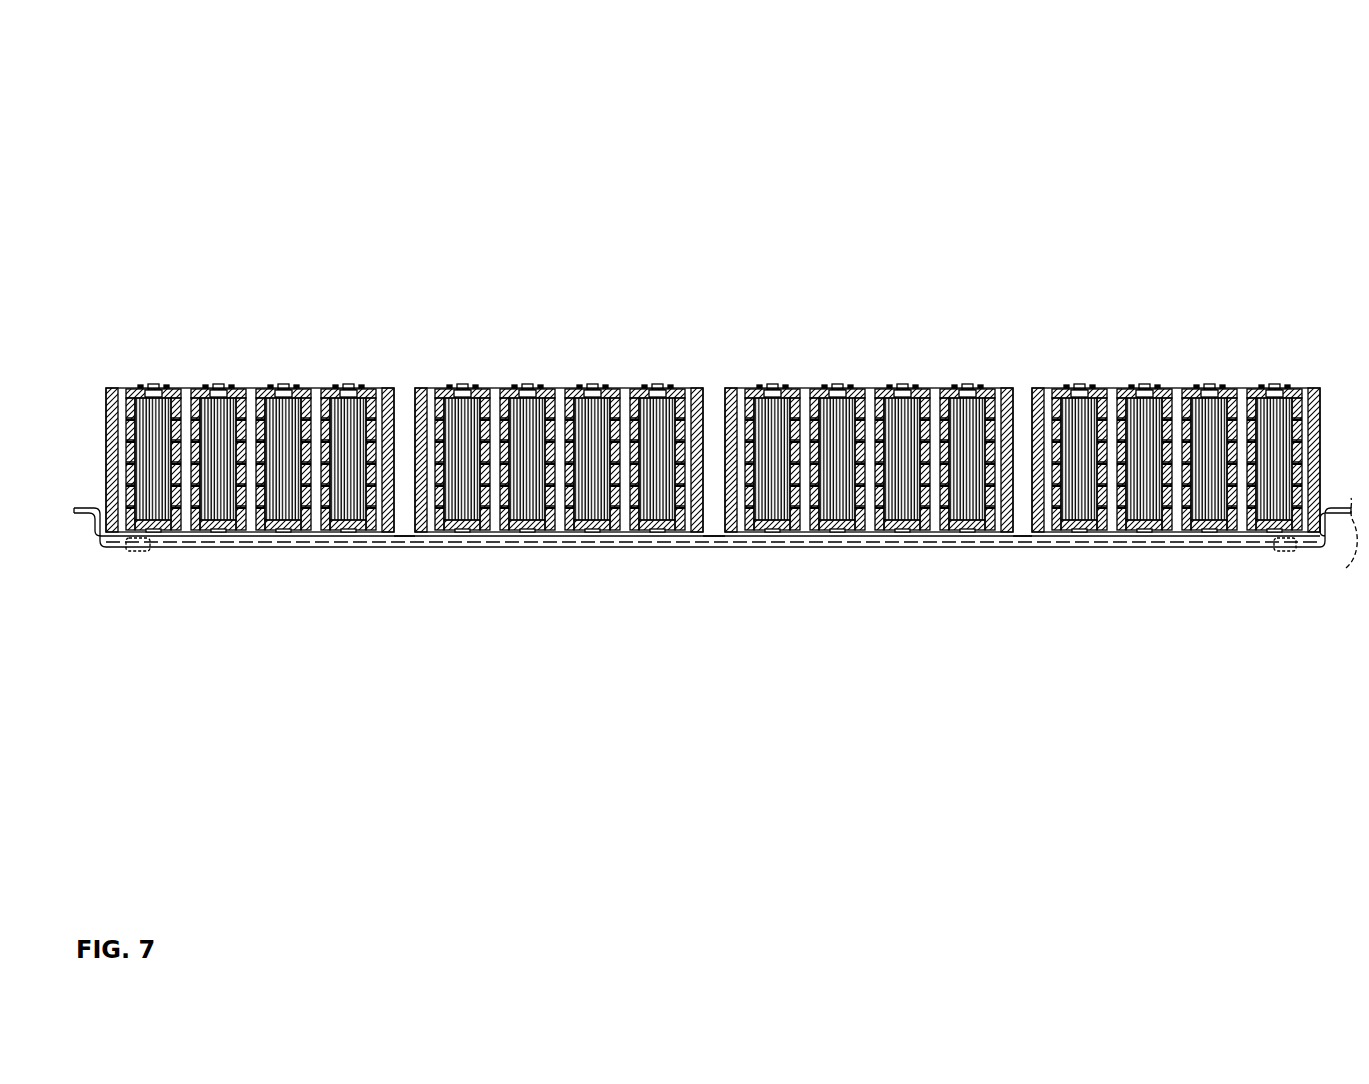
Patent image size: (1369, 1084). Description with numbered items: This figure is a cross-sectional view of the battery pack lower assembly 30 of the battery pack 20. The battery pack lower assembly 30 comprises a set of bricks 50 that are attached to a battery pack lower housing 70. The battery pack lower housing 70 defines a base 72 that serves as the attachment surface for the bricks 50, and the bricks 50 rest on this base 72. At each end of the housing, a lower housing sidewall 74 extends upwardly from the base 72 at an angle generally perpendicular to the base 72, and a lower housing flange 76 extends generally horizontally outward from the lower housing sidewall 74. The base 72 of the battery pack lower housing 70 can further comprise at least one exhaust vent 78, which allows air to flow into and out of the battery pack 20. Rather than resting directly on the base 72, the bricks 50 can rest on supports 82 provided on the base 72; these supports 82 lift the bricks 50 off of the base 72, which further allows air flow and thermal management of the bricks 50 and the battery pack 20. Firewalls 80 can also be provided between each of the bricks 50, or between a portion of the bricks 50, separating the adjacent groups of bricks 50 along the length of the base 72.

The battery pack 20 is at (1001, 137).
The battery pack lower assembly 30 is at (1339, 545).
The bricks 50 is at (283, 350).
The battery pack lower housing 70 is at (156, 552).
The base 72 is at (266, 542).
The lower housing sidewall 74 is at (90, 524).
The lower housing flange 76 is at (79, 498).
The exhaust vent 78 is at (132, 543).
The firewalls 80 is at (397, 505).
The supports 82 is at (102, 540).